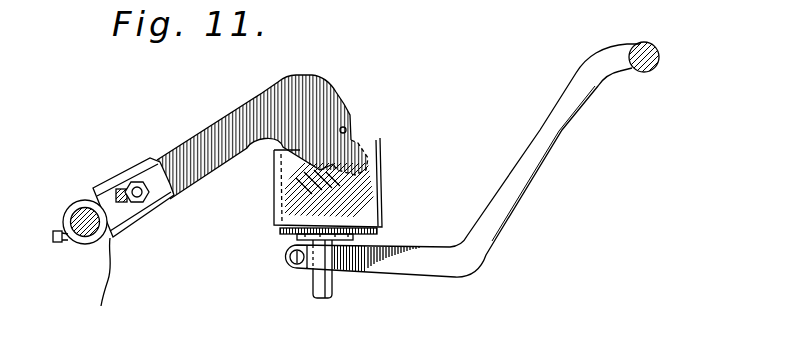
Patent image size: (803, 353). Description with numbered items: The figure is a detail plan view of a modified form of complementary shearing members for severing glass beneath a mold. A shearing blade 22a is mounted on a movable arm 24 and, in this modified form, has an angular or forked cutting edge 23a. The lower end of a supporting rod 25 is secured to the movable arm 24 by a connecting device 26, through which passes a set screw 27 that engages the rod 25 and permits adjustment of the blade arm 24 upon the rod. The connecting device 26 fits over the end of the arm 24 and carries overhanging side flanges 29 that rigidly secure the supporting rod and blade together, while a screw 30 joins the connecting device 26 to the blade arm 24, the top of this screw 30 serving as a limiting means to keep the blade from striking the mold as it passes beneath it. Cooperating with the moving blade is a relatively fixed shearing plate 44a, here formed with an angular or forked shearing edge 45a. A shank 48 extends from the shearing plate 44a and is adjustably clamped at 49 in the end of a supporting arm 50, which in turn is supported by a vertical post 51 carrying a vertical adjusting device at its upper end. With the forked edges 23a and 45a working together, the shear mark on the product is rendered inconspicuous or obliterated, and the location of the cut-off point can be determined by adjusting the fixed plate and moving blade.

The movable arm 24 is at (232, 124).
The supporting rod 25 is at (72, 214).
The connecting device 26 is at (115, 183).
The set screw 27 is at (61, 244).
The overhanging side flanges 29 is at (127, 279).
The screw 30 is at (138, 204).
The shearing blade 22a is at (315, 144).
The angular or forked cutting edge 23a is at (385, 168).
The shearing plate 44a is at (363, 199).
The angular or forked shearing edge 45a is at (315, 144).
The shank 48 is at (330, 298).
The clamp 49 is at (293, 269).
The supporting arm 50 is at (437, 272).
The vertical post 51 is at (648, 56).